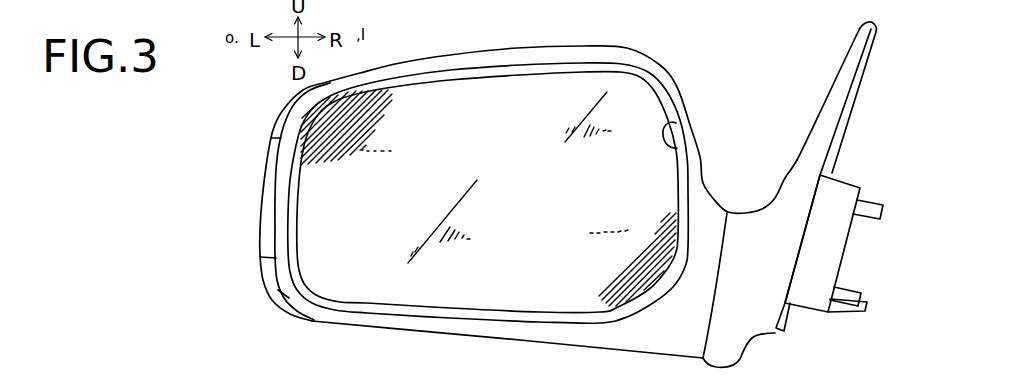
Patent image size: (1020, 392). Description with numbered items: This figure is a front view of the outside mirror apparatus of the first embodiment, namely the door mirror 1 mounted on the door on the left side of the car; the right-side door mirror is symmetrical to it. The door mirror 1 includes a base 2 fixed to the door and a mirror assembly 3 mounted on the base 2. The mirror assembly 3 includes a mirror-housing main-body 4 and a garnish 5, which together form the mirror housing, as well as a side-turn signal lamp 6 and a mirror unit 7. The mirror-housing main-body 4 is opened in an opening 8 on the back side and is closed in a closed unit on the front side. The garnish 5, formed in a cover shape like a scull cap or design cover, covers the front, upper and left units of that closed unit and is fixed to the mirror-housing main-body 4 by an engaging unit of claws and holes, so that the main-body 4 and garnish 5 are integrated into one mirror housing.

The door mirror 1 is at (695, 78).
The base 2 is at (852, 122).
The mirror assembly 3 is at (552, 47).
The mirror-housing main-body 4 is at (590, 337).
The garnish 5 is at (625, 48).
The side-turn signal lamp 6 is at (260, 197).
The mirror unit 7 is at (483, 88).
The opening 8 is at (668, 123).